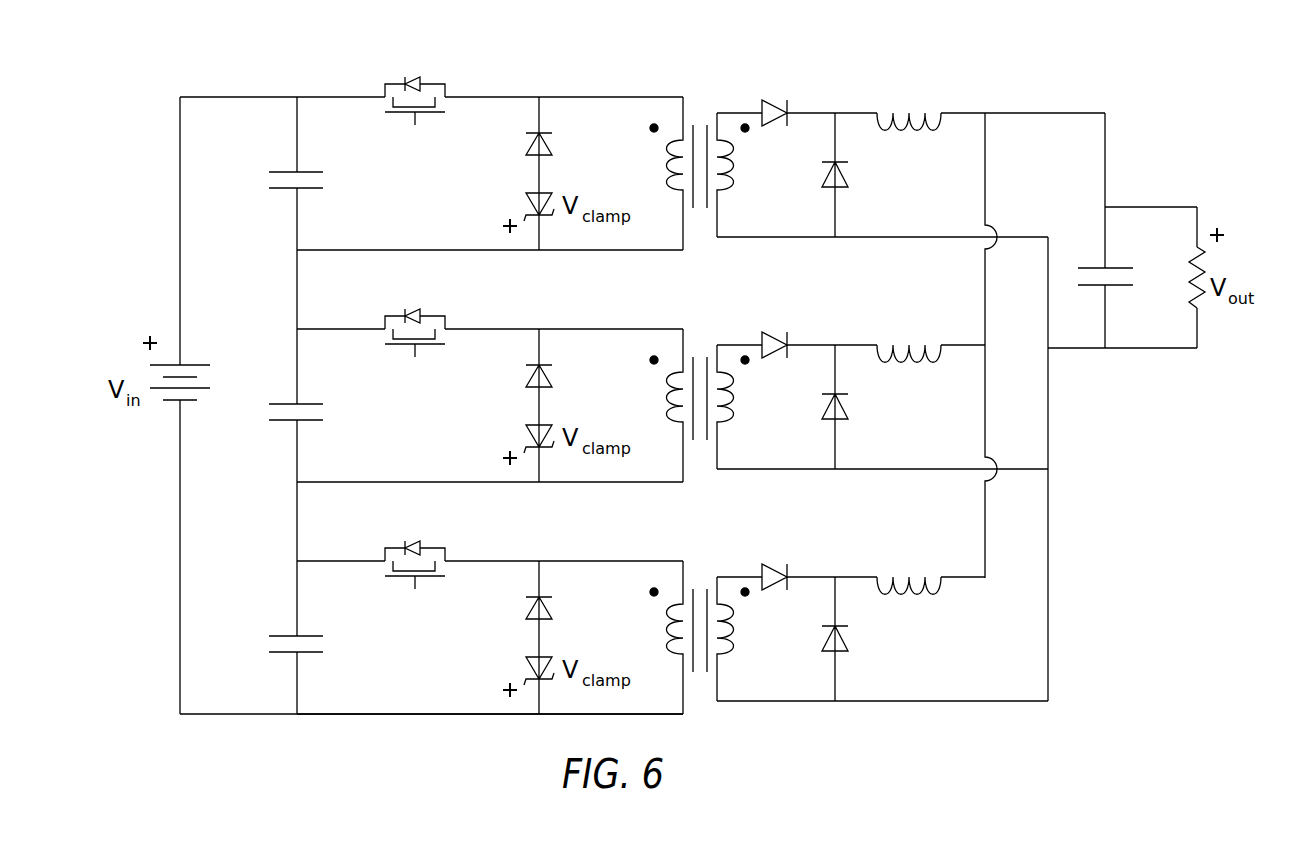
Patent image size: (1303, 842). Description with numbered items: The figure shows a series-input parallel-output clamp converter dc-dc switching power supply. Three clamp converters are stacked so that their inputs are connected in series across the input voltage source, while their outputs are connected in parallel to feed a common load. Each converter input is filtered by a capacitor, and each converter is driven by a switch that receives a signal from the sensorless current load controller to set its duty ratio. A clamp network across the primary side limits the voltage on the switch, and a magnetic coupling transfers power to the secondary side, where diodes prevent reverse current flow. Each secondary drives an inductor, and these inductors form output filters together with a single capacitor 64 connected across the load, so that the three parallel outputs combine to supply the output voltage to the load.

The capacitor 64 is at (1105, 268).